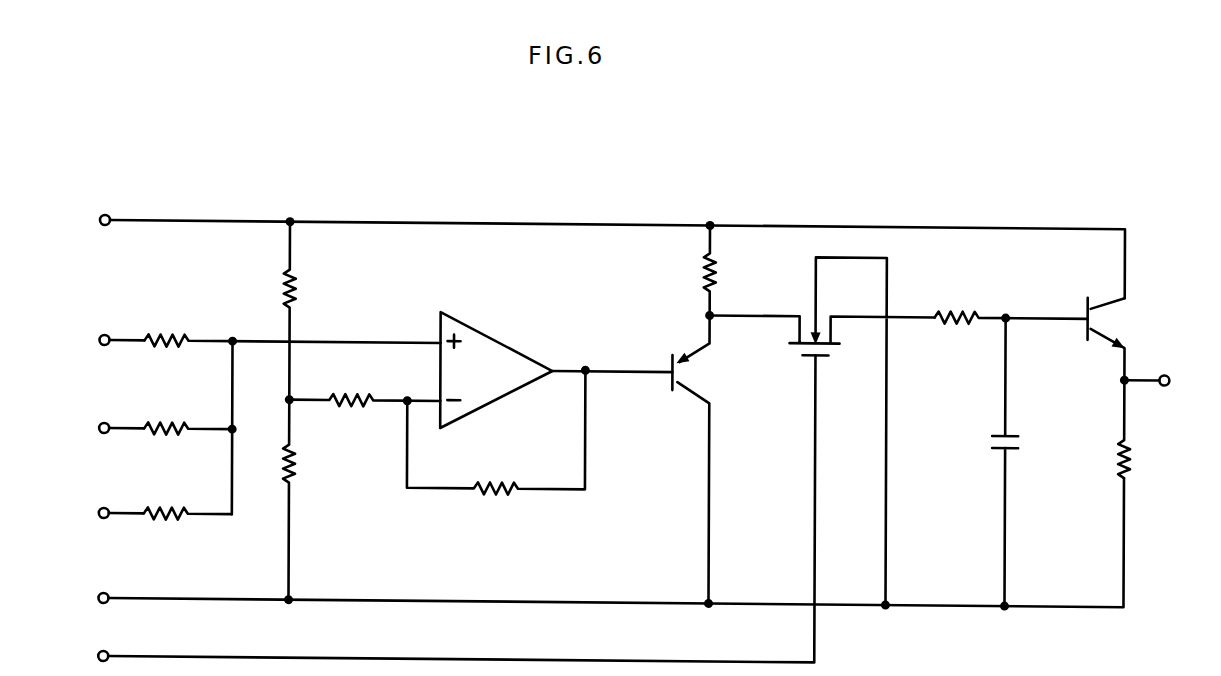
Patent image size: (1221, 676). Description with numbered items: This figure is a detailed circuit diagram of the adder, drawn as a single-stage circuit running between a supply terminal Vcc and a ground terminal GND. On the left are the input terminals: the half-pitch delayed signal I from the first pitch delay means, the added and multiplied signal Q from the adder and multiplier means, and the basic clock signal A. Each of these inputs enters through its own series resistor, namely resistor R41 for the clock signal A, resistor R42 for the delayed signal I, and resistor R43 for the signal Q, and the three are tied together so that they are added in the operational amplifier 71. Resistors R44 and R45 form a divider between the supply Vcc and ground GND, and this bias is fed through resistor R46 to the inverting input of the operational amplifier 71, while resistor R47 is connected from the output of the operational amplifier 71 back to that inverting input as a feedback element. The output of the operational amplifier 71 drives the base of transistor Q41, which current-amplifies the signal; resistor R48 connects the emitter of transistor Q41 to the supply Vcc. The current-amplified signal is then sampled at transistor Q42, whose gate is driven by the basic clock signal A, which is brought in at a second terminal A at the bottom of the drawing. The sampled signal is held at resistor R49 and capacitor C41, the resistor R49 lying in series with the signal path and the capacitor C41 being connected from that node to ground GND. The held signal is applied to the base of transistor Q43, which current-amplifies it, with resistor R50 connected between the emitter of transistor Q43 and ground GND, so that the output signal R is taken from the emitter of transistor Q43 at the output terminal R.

The input resistor (A) R41 is at (292, 412).
The input resistor (I) R42 is at (190, 416).
The input resistor (Q) R43 is at (188, 501).
The bias divider resistor R44 is at (316, 311).
The bias divider resistor R45 is at (315, 502).
The inverting input resistor R46 is at (364, 387).
The feedback resistor R47 is at (496, 432).
The emitter resistor R48 is at (738, 268).
The resistor R49 is at (1010, 303).
The output emitter resistor R50 is at (1152, 430).
The operational amplifier 71 is at (513, 343).
The transistor Q41 is at (707, 460).
The transistor Q42 is at (821, 433).
The transistor Q43 is at (1120, 339).
The capacitor C41 is at (1025, 464).
The supply terminal Vcc is at (586, 252).
The ground terminal GND is at (581, 546).
The basic clock signal A is at (439, 502).
The 0.5 pitch delayed signal I is at (106, 430).
The added and multiplied signal Q is at (103, 515).
The output signal R is at (1156, 381).